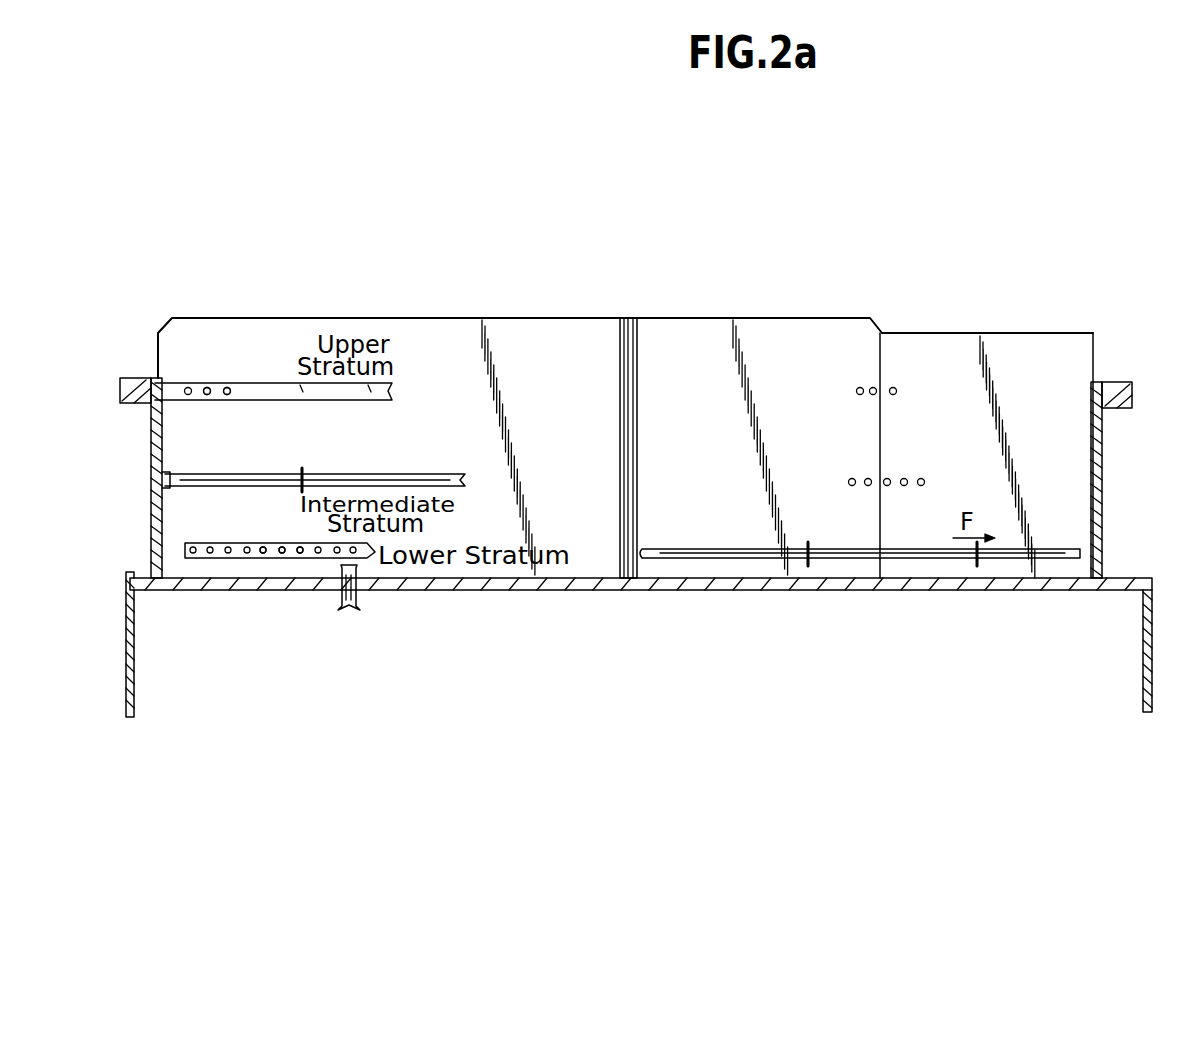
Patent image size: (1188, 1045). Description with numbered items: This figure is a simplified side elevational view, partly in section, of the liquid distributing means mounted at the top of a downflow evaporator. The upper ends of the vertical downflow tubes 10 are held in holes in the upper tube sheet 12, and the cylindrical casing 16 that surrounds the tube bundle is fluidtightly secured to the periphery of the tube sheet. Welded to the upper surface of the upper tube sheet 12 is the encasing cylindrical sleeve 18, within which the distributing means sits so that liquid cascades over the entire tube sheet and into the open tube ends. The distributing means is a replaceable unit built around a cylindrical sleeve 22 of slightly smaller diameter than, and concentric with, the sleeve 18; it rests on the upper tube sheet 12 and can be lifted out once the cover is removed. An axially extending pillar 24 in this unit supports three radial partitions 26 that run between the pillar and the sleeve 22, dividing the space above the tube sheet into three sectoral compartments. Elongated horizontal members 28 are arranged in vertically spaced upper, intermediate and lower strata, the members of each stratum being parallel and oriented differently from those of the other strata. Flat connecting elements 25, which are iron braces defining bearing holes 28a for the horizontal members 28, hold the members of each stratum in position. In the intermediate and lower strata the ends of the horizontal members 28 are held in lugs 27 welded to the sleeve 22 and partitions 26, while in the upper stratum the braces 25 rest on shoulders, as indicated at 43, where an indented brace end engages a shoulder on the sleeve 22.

The downflow tubes 10 is at (358, 598).
The upper tube sheet 12 is at (233, 594).
The cylindrical casing 16 is at (126, 614).
The cylindrical sleeve 18 is at (148, 528).
The cylindrical sleeve 22 is at (972, 331).
The axially extending pillar 24 is at (632, 366).
The flat connecting elements 25 is at (272, 388).
The partitions 26 is at (736, 320).
The lugs 27 is at (170, 471).
The horizontal members 28 is at (430, 474).
The bearing holes 28a is at (210, 395).
The shoulder engagement 43 is at (158, 391).